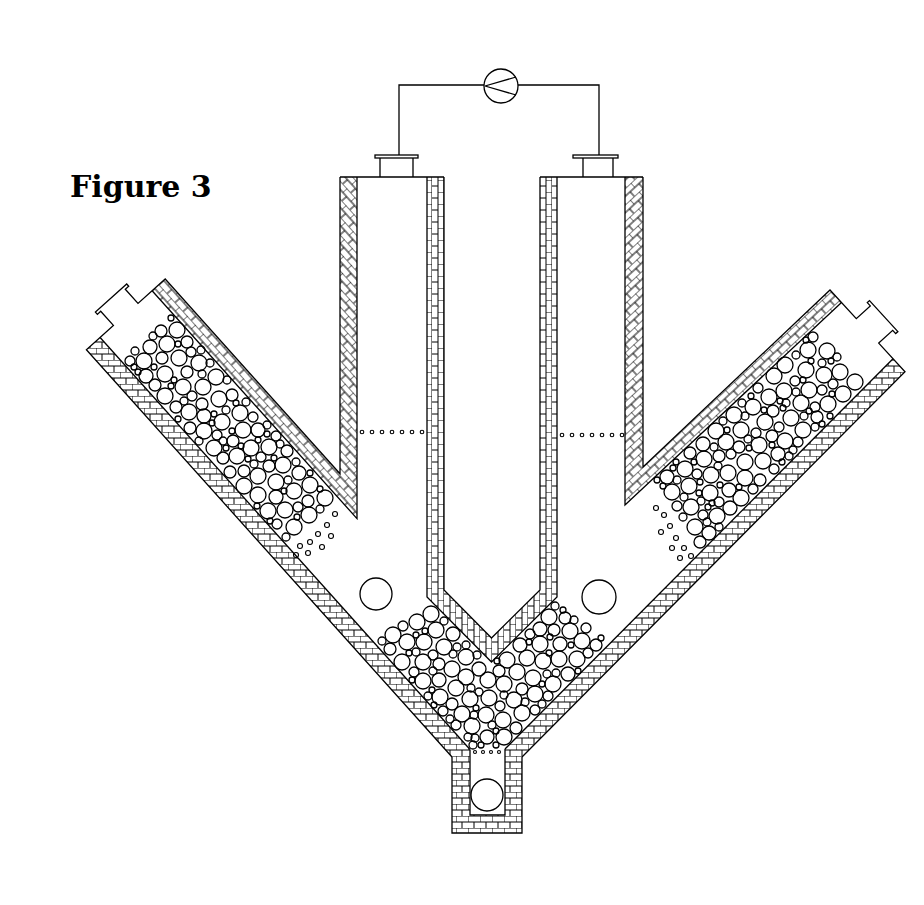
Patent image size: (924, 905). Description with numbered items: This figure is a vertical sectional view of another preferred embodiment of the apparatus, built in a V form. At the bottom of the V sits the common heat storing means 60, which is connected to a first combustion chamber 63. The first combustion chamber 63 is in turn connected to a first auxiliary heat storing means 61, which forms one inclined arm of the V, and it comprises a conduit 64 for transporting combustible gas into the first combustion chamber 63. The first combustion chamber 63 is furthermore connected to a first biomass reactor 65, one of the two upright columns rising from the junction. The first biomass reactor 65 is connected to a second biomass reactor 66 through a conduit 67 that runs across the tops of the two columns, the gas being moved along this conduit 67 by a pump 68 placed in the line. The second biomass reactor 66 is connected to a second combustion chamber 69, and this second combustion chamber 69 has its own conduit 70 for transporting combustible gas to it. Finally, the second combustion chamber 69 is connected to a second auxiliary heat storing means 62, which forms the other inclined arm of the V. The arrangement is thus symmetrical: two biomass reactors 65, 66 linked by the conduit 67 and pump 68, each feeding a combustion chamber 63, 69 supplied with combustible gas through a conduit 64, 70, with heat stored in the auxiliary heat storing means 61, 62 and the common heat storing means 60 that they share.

The common heat storing means 60 is at (576, 698).
The first auxiliary heat storing means 61 is at (192, 452).
The second auxiliary heat storing means 62 is at (808, 470).
The first combustion chamber 63 is at (325, 552).
The conduit 64 is at (361, 596).
The first biomass reactor 65 is at (356, 276).
The second biomass reactor 66 is at (614, 278).
The conduit 67 is at (446, 85).
The pump 68 is at (514, 75).
The second combustion chamber 69 is at (652, 573).
The conduit 70 is at (616, 603).